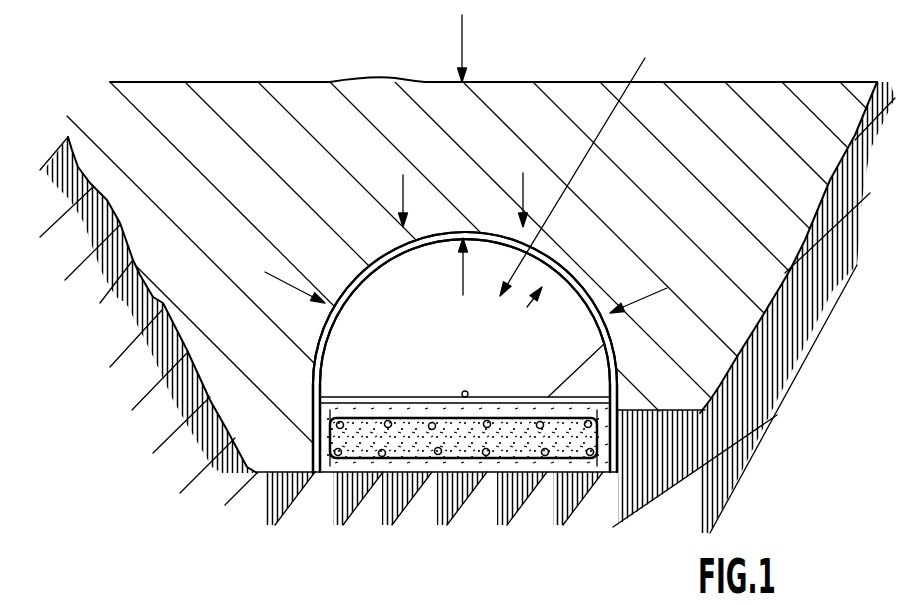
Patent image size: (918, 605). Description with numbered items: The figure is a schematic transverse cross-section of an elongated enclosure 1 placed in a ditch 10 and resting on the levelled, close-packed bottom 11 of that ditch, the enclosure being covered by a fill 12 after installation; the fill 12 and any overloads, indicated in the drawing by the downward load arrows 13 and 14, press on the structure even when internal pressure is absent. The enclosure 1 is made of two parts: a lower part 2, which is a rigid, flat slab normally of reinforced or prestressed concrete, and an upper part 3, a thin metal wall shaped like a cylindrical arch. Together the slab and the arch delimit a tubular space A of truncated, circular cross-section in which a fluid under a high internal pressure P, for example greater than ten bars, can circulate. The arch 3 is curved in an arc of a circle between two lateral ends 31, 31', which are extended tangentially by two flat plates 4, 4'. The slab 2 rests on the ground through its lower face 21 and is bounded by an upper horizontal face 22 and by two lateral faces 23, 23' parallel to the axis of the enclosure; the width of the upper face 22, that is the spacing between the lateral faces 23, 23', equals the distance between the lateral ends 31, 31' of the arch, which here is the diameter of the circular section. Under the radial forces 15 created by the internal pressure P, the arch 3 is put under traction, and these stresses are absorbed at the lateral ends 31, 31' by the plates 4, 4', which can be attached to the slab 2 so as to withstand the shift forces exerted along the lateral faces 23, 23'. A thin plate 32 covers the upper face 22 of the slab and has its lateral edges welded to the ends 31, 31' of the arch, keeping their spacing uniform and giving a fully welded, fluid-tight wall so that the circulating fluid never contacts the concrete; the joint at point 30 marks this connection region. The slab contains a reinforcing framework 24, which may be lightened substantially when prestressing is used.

The elongated enclosure 1 is at (600, 261).
The lower part 2 is at (353, 472).
The upper part 3 is at (383, 258).
The flat plate 4 is at (430, 420).
The flat plate 4' is at (717, 394).
The ditch 10 is at (250, 150).
The bottom 11 is at (625, 450).
The fill 12 is at (522, 110).
The earth load 13 is at (405, 193).
The surface load 14 is at (466, 43).
The radial forces 15 is at (388, 293).
The lower face 21 is at (420, 450).
The upper horizontal face 22 is at (604, 344).
The lateral face 23 is at (352, 414).
The lateral face 23' is at (580, 486).
The framework 24 is at (470, 472).
The joint 30 is at (466, 391).
The lateral end 31 is at (288, 403).
The lateral end 31' is at (640, 418).
The thin plate 32 is at (509, 396).
The tubular space A is at (578, 160).
The internal pressure P is at (463, 294).